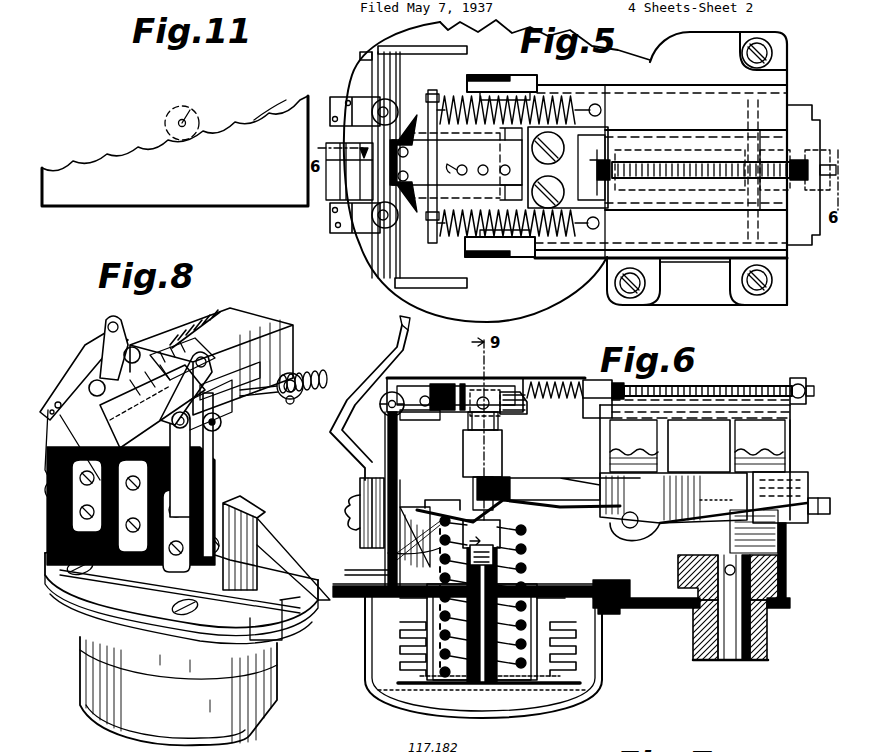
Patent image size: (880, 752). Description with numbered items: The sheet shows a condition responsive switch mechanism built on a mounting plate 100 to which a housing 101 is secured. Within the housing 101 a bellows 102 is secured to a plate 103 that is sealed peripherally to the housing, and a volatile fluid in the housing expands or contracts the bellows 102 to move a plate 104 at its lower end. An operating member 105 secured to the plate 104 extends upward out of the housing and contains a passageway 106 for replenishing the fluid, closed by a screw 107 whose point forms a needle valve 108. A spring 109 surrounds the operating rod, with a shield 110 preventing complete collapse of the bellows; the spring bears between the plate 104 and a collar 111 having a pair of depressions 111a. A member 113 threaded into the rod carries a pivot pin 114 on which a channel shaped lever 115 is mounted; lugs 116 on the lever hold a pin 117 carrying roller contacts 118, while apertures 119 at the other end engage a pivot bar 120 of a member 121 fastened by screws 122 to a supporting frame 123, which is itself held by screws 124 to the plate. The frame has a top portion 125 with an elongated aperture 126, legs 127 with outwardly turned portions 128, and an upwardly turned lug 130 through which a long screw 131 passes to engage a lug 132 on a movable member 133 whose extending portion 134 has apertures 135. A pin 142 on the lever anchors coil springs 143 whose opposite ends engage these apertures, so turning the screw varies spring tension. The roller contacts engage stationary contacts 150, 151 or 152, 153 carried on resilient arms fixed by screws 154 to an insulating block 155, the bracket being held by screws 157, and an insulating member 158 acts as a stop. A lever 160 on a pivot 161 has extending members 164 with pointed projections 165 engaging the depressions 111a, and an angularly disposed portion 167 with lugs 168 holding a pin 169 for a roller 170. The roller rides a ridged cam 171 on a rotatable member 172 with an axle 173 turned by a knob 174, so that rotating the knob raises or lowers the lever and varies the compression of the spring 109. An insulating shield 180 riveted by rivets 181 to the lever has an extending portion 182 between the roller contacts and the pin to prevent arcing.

In FIG. 5, the mounting plate 100 is at (692, 55).
In FIG. 8, the mounting plate 100 is at (288, 622).
In FIG. 6, the mounting plate 100 is at (675, 612).
In FIG. 8, the housing 101 is at (262, 720).
In FIG. 6, the housing 101 is at (600, 652).
In FIG. 6, the bellows 102 is at (396, 650).
In FIG. 6, the plate 103 is at (380, 620).
In FIG. 6, the plate 104 is at (542, 690).
In FIG. 6, the operating member 105 is at (540, 592).
In FIG. 6, the passageway 106 is at (485, 690).
In FIG. 6, the screw 107 is at (388, 578).
In FIG. 6, the needle valve 108 is at (505, 578).
In FIG. 6, the spring 109 is at (430, 682).
In FIG. 6, the shield 110 is at (592, 612).
In FIG. 6, the collar 111 is at (436, 496).
In FIG. 6, the depressions 111a is at (388, 553).
In FIG. 6, the member 113 is at (490, 432).
In FIG. 6, the pivot pin 114 is at (465, 432).
In FIG. 8, the lever 115 is at (250, 320).
In FIG. 6, the lever 115 is at (436, 385).
In FIG. 8, the lugs 116 is at (138, 348).
In FIG. 8, the pin 117 is at (180, 330).
In FIG. 6, the pin 117 is at (385, 410).
In FIG. 5, the roller contacts 118 is at (400, 95).
In FIG. 8, the roller contacts 118 is at (97, 378).
In FIG. 6, the roller contacts 118 is at (385, 360).
In FIG. 6, the apertures 119 is at (500, 390).
In FIG. 6, the pivot pin or bar 120 is at (520, 392).
In FIG. 5, the member 121 is at (620, 130).
In FIG. 6, the member 121 is at (546, 388).
In FIG. 5, the screws 122 is at (614, 126).
In FIG. 5, the supporting frame 123 is at (751, 100).
In FIG. 6, the supporting frame 123 is at (765, 448).
In FIG. 5, the screws 124 is at (742, 57).
In FIG. 5, the top portion 125 is at (745, 120).
In FIG. 6, the top portion 125 is at (700, 410).
In FIG. 5, the elongated aperture 126 is at (680, 150).
In FIG. 6, the legs 127 is at (658, 470).
In FIG. 5, the outwardly turned portions 128 is at (782, 50).
In FIG. 5, the upwardly turned lug 130 is at (792, 150).
In FIG. 6, the upwardly turned lug 130 is at (793, 380).
In FIG. 5, the screw 131 is at (748, 162).
In FIG. 6, the screw 131 is at (700, 380).
In FIG. 5, the lug 132 is at (632, 163).
In FIG. 6, the lug 132 is at (625, 384).
In FIG. 6, the movable member 133 is at (615, 380).
In FIG. 5, the extending portion 134 is at (612, 193).
In FIG. 5, the apertures 135 is at (580, 128).
In FIG. 5, the pin 142 is at (434, 92).
In FIG. 8, the pin 142 is at (293, 412).
In FIG. 6, the pin 142 is at (425, 394).
In FIG. 5, the coil springs 143 is at (470, 85).
In FIG. 8, the coil springs 143 is at (218, 318).
In FIG. 6, the coil springs 143 is at (588, 388).
In FIG. 8, the stationary contact 150 is at (80, 352).
In FIG. 8, the stationary contact 151 is at (205, 455).
In FIG. 6, the stationary contact 151 is at (380, 345).
In FIG. 5, the stationary contact 152 is at (352, 95).
In FIG. 8, the stationary contact 152 is at (126, 315).
In FIG. 5, the stationary contact 153 is at (352, 236).
In FIG. 8, the stationary contact 153 is at (208, 356).
In FIG. 6, the stationary contact 153 is at (408, 320).
In FIG. 8, the screws 154 is at (150, 550).
In FIG. 6, the screws 154 is at (342, 498).
In FIG. 8, the insulating block 155 is at (238, 504).
In FIG. 5, the screws 157 is at (430, 48).
In FIG. 8, the insulating member 158 is at (212, 484).
In FIG. 6, the insulating member 158 is at (398, 456).
In FIG. 6, the lever 160 is at (698, 500).
In FIG. 6, the pivot 161 is at (638, 512).
In FIG. 6, the extending members 164 is at (512, 498).
In FIG. 6, the pointed projection 165 is at (470, 478).
In FIG. 6, the angularly disposed portion 167 is at (790, 460).
In FIG. 11, the pin 169 is at (190, 110).
In FIG. 6, the pin 169 is at (802, 480).
In FIG. 6, the lugs 168 is at (740, 530).
In FIG. 11, the roller 170 is at (170, 104).
In FIG. 6, the roller 170 is at (745, 540).
In FIG. 11, the cam 171 is at (270, 122).
In FIG. 6, the cam 171 is at (790, 570).
In FIG. 6, the rotatable member 172 is at (780, 610).
In FIG. 6, the axle 173 is at (735, 668).
In FIG. 6, the knob 174 is at (712, 668).
In FIG. 5, the insulating shield 180 is at (438, 165).
In FIG. 8, the insulating shield 180 is at (215, 343).
In FIG. 6, the insulating shield 180 is at (460, 378).
In FIG. 5, the rivets 181 is at (478, 166).
In FIG. 8, the extending portion 182 is at (232, 414).
In FIG. 6, the extending portion 182 is at (415, 428).